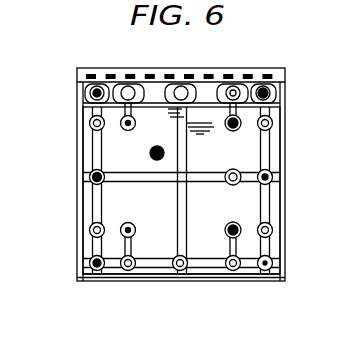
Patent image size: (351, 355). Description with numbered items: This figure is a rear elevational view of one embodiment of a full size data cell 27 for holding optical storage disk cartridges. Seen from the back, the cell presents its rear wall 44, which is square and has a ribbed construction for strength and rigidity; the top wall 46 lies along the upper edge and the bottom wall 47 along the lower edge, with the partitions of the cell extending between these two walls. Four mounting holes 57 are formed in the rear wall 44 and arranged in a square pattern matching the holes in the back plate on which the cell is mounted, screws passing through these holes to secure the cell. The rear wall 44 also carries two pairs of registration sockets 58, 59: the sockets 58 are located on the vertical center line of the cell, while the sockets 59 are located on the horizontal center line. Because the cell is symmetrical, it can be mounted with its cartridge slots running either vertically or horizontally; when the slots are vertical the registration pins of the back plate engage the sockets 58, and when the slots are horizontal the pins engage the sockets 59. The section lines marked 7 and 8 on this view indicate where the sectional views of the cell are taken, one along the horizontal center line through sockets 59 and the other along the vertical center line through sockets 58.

The full size data cell 27 is at (291, 114).
The rear wall 44 is at (113, 208).
The top wall 46 is at (252, 67).
The bottom wall 47 is at (181, 300).
The mounting holes 57 is at (91, 93).
The registration sockets 58 is at (181, 181).
The registration sockets 59 is at (90, 178).
The section line 7- 7 is at (92, 177).
The section line 8- 8 is at (233, 168).